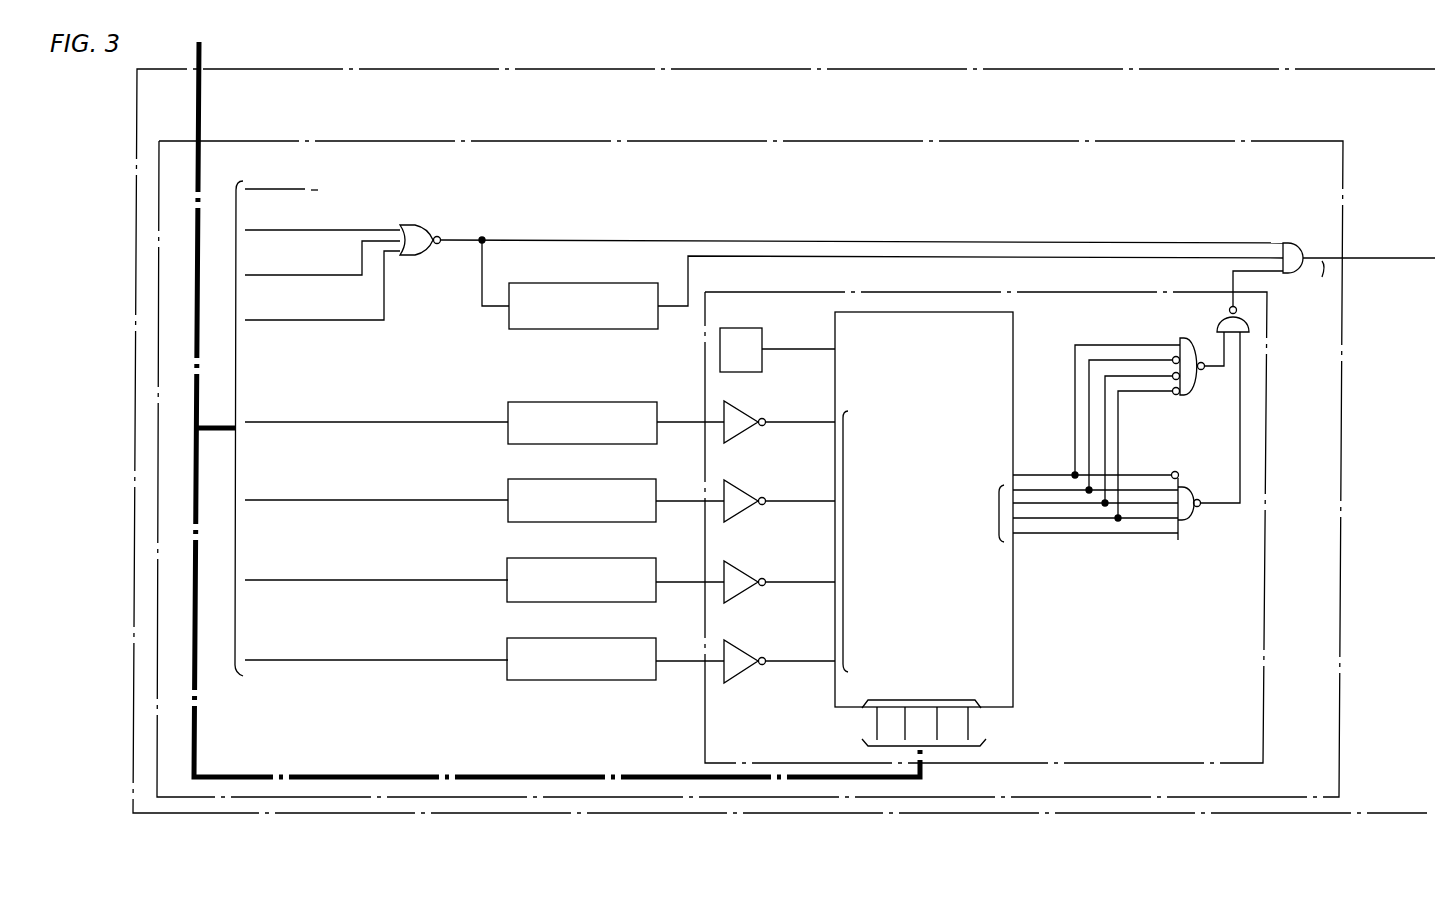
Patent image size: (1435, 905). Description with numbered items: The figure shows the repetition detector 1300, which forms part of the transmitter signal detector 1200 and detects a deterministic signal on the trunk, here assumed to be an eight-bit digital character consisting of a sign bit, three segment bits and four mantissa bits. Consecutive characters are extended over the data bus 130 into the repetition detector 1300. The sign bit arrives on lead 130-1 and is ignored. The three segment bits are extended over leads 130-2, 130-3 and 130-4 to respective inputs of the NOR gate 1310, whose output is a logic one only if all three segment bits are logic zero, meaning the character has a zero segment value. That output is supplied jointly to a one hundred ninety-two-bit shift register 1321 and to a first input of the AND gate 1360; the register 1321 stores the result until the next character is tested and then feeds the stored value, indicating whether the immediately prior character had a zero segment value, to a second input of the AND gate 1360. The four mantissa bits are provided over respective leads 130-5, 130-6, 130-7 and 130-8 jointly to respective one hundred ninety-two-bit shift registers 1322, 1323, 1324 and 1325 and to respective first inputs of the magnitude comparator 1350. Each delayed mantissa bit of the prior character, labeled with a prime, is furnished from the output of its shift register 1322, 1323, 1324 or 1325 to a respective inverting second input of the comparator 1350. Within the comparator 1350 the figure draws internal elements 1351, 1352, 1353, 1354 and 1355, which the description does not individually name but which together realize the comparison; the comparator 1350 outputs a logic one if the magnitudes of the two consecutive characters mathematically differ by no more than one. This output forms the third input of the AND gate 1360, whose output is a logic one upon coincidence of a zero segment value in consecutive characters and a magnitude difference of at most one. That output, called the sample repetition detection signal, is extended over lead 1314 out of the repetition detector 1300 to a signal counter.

The data bus 130 is at (201, 54).
The lead 130-1 is at (292, 189).
The lead 130-2 is at (292, 230).
The lead 130-3 is at (292, 275).
The lead 130-4 is at (292, 320).
The lead 130-5 is at (291, 422).
The lead 130-6 is at (295, 500).
The lead 130-7 is at (295, 580).
The lead 130-8 is at (295, 660).
The signal detector 1200 is at (997, 69).
The repetition detector 1300 is at (997, 141).
The NOR gate 1310 is at (404, 225).
The lead 1314 is at (1385, 258).
The shift register 1321 is at (592, 283).
The shift register 1322 is at (591, 402).
The shift register 1323 is at (591, 479).
The shift register 1324 is at (591, 558).
The shift register 1325 is at (591, 638).
The magnitude comparator 1350 is at (1265, 674).
The constant one source 1351 is at (766, 320).
The adder 1352 is at (1013, 318).
The NAND gate 1353 is at (1189, 394).
The NAND gate 1354 is at (1190, 520).
The NAND gate 1355 is at (1216, 322).
The AND gate 1360 is at (1288, 243).